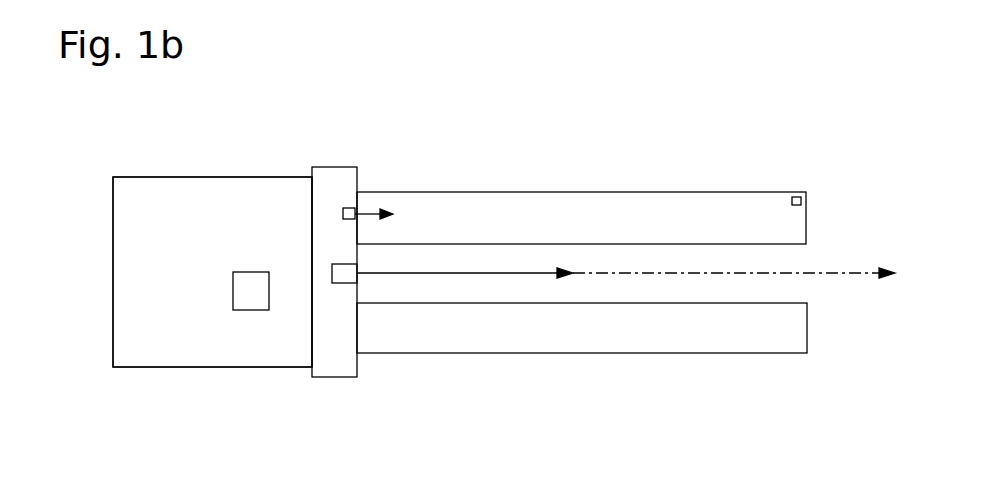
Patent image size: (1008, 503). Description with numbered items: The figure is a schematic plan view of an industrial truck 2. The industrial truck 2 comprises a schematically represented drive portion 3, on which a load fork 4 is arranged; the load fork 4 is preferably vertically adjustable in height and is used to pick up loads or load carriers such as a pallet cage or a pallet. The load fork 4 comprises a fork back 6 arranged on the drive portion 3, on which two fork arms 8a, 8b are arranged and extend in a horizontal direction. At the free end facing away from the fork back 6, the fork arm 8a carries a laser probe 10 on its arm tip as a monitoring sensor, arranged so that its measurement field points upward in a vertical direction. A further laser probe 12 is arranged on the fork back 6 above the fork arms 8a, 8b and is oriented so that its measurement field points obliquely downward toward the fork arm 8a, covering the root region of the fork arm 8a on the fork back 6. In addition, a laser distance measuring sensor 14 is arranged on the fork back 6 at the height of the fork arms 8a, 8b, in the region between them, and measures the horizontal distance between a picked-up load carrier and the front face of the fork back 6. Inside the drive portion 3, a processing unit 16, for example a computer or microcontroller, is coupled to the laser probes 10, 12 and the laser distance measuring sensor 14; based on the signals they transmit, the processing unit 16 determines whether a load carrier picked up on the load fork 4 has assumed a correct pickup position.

The industrial truck 2 is at (103, 248).
The drive portion 3 is at (208, 197).
The load fork 4 is at (380, 380).
The fork back 6 is at (337, 195).
The fork arm 8a is at (577, 215).
The fork arm 8b is at (626, 330).
The laser probe 10 is at (802, 200).
The laser probe 12 is at (350, 210).
The laser distance measuring sensor 14 is at (340, 283).
The processing unit 16 is at (252, 296).